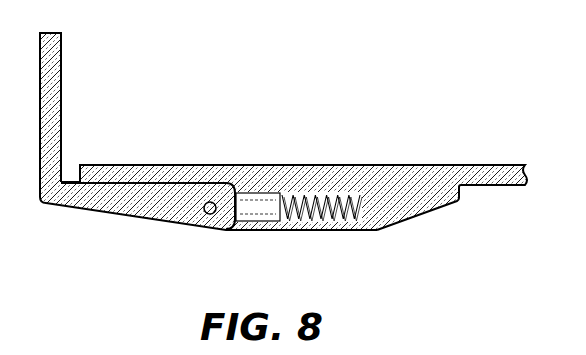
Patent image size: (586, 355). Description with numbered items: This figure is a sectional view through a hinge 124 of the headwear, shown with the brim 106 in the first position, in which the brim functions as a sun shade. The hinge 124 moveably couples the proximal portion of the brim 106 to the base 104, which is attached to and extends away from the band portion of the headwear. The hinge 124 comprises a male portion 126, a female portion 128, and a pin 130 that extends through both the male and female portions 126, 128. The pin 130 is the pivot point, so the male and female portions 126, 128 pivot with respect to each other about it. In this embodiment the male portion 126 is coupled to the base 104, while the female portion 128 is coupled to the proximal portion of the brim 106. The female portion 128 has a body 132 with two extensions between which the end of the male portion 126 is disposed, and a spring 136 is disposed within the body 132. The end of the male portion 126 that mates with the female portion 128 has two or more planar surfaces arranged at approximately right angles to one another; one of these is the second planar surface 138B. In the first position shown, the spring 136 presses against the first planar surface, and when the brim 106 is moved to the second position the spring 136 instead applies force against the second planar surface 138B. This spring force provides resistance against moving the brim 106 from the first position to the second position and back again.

The base 104 is at (67, 197).
The brim 106 is at (493, 172).
The hinge 124 is at (305, 88).
The male portion 126 is at (132, 207).
The female portion 128 is at (440, 228).
The pin 130 is at (210, 201).
The body 132 is at (318, 189).
The spring 136 is at (352, 192).
The second planar surface 138B is at (215, 232).